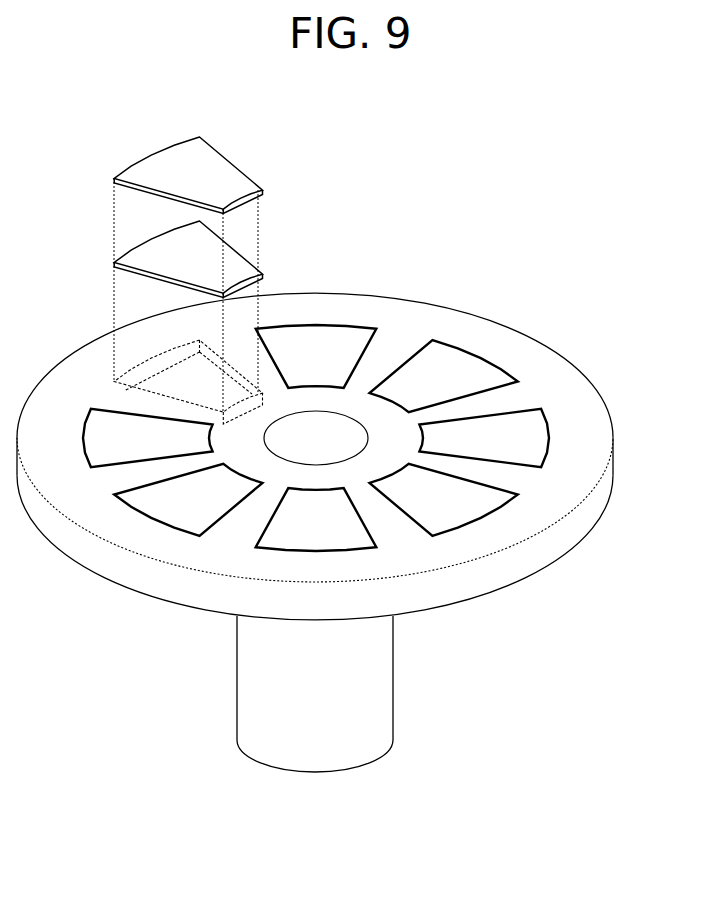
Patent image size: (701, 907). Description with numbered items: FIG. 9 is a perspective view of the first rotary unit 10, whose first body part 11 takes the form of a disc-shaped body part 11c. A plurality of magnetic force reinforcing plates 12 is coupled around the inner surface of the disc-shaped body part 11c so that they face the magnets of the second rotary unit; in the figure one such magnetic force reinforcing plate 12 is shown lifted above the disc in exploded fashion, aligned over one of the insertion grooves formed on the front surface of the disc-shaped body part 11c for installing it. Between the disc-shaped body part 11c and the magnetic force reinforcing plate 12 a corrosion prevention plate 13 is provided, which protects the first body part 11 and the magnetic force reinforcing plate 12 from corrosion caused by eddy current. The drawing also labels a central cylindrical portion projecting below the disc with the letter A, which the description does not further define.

The first rotary unit 10 is at (432, 209).
The first body part 11 is at (495, 345).
The disc-shaped body part 11c is at (316, 438).
The magnetic force reinforcing plate 12 is at (155, 158).
The corrosion prevention plate 13 is at (138, 238).
The shaft A is at (357, 700).